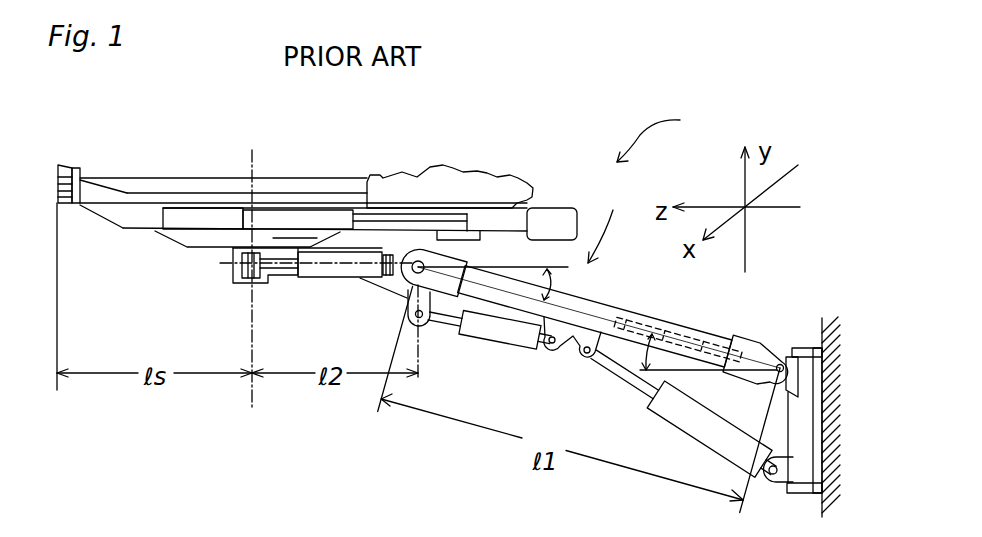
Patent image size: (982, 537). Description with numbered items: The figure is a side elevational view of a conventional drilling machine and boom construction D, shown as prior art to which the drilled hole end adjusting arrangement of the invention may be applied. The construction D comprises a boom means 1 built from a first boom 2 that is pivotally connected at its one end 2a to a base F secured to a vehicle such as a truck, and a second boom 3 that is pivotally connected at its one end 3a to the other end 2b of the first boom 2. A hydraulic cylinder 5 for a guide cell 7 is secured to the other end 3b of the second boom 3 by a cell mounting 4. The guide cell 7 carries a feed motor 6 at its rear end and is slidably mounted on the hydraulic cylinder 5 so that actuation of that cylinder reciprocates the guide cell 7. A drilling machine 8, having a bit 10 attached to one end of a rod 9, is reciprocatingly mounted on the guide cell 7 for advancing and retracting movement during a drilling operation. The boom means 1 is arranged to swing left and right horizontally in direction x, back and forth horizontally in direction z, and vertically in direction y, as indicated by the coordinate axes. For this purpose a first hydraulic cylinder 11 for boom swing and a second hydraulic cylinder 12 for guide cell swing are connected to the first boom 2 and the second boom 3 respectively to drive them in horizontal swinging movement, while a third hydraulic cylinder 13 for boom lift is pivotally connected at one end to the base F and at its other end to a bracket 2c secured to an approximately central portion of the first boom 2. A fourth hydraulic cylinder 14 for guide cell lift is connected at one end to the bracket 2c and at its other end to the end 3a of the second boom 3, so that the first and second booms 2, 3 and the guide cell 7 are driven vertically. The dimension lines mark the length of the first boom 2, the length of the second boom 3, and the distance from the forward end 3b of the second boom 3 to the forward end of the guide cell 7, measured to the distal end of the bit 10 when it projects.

The boom means 1 is at (613, 203).
The first boom 2 is at (600, 302).
The one end of first boom 2a is at (753, 337).
The other end of first boom 2b is at (450, 250).
The bracket 2c is at (563, 350).
The second boom 3 is at (285, 268).
The one end of second boom 3a is at (387, 287).
The other end of second boom 3b is at (240, 282).
The cell mounting 4 is at (213, 240).
The hydraulic cylinder 5 is at (183, 217).
The feed motor 6 is at (557, 215).
The guide cell 7 is at (113, 212).
The drilling machine 8 is at (480, 182).
The rod 9 is at (224, 185).
The bit 10 is at (58, 183).
The first hydraulic cylinder 11 is at (708, 332).
The second hydraulic cylinder 12 is at (327, 268).
The third hydraulic cylinder 13 is at (692, 427).
The fourth hydraulic cylinder 14 is at (483, 335).
The drilling machine and boom construction D is at (658, 135).
The base F is at (807, 367).